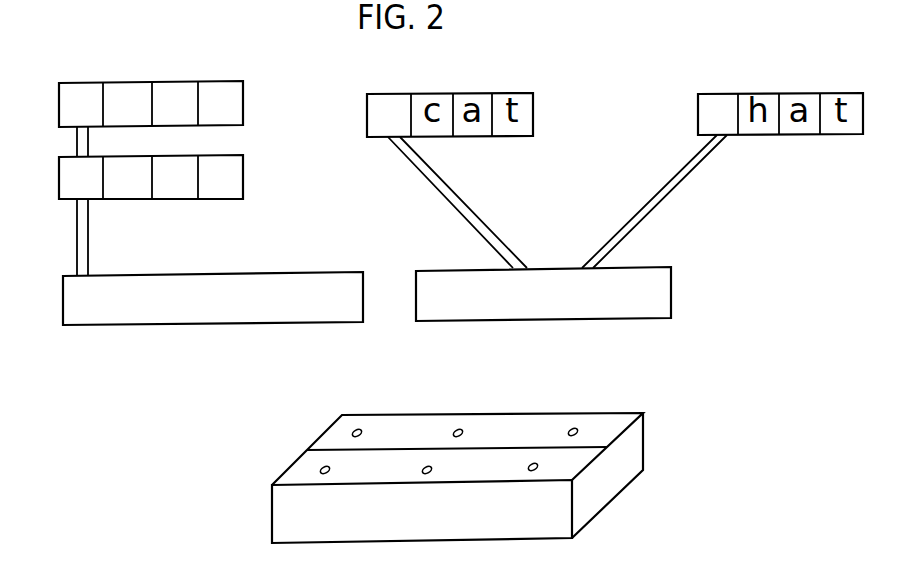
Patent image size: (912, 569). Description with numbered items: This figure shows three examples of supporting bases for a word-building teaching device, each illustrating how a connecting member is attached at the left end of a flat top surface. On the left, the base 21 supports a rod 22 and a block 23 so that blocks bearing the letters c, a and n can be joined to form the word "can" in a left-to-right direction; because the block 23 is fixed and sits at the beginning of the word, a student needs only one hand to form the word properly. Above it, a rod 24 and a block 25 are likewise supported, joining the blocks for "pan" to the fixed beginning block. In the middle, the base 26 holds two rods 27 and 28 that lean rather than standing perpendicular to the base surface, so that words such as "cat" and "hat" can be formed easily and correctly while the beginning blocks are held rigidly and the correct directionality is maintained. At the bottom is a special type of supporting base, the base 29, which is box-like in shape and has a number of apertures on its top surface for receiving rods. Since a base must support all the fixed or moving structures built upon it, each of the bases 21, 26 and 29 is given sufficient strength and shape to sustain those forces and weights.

The base 21 is at (202, 270).
The rod 22 is at (92, 249).
The block 23 is at (60, 197).
The rod 24 is at (75, 142).
The block 25 is at (75, 80).
The base 26 is at (678, 287).
The rod 27 is at (477, 208).
The rod 28 is at (678, 190).
The base 29 is at (452, 412).